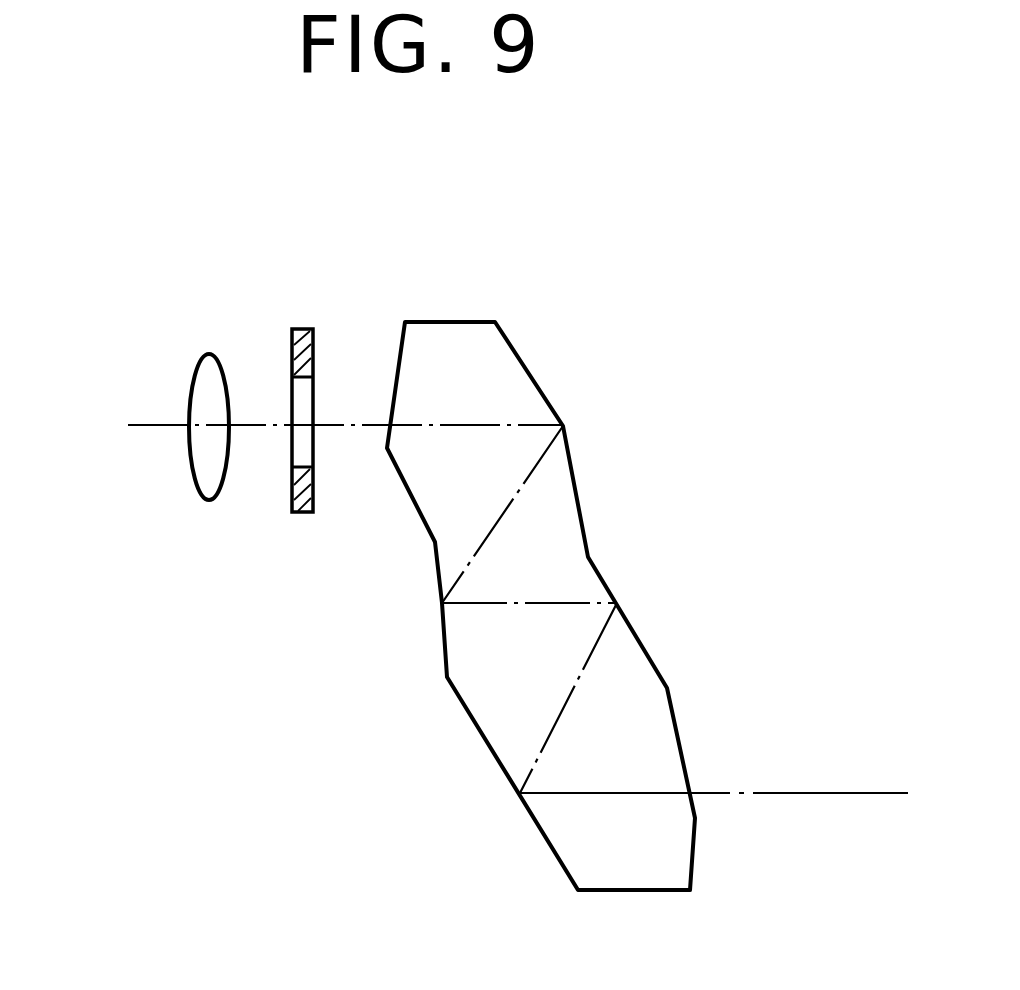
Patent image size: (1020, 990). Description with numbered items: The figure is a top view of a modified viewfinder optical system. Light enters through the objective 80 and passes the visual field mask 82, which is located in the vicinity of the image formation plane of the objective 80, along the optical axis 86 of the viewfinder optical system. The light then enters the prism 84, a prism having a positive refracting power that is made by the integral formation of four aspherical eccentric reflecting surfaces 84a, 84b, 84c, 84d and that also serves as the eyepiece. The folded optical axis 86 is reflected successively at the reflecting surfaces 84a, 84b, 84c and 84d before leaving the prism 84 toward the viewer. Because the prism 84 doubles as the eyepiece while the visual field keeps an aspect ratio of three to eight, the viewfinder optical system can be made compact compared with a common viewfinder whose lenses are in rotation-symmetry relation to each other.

The objective 80 is at (210, 350).
The visual field mask 82 is at (303, 328).
The prism 84 is at (556, 622).
The aspherical eccentric reflecting surface 84a is at (573, 460).
The aspherical eccentric reflecting surface 84b is at (440, 590).
The aspherical eccentric reflecting surface 84c is at (637, 635).
The aspherical eccentric reflecting surface 84d is at (530, 815).
The optical axis 86 is at (152, 425).